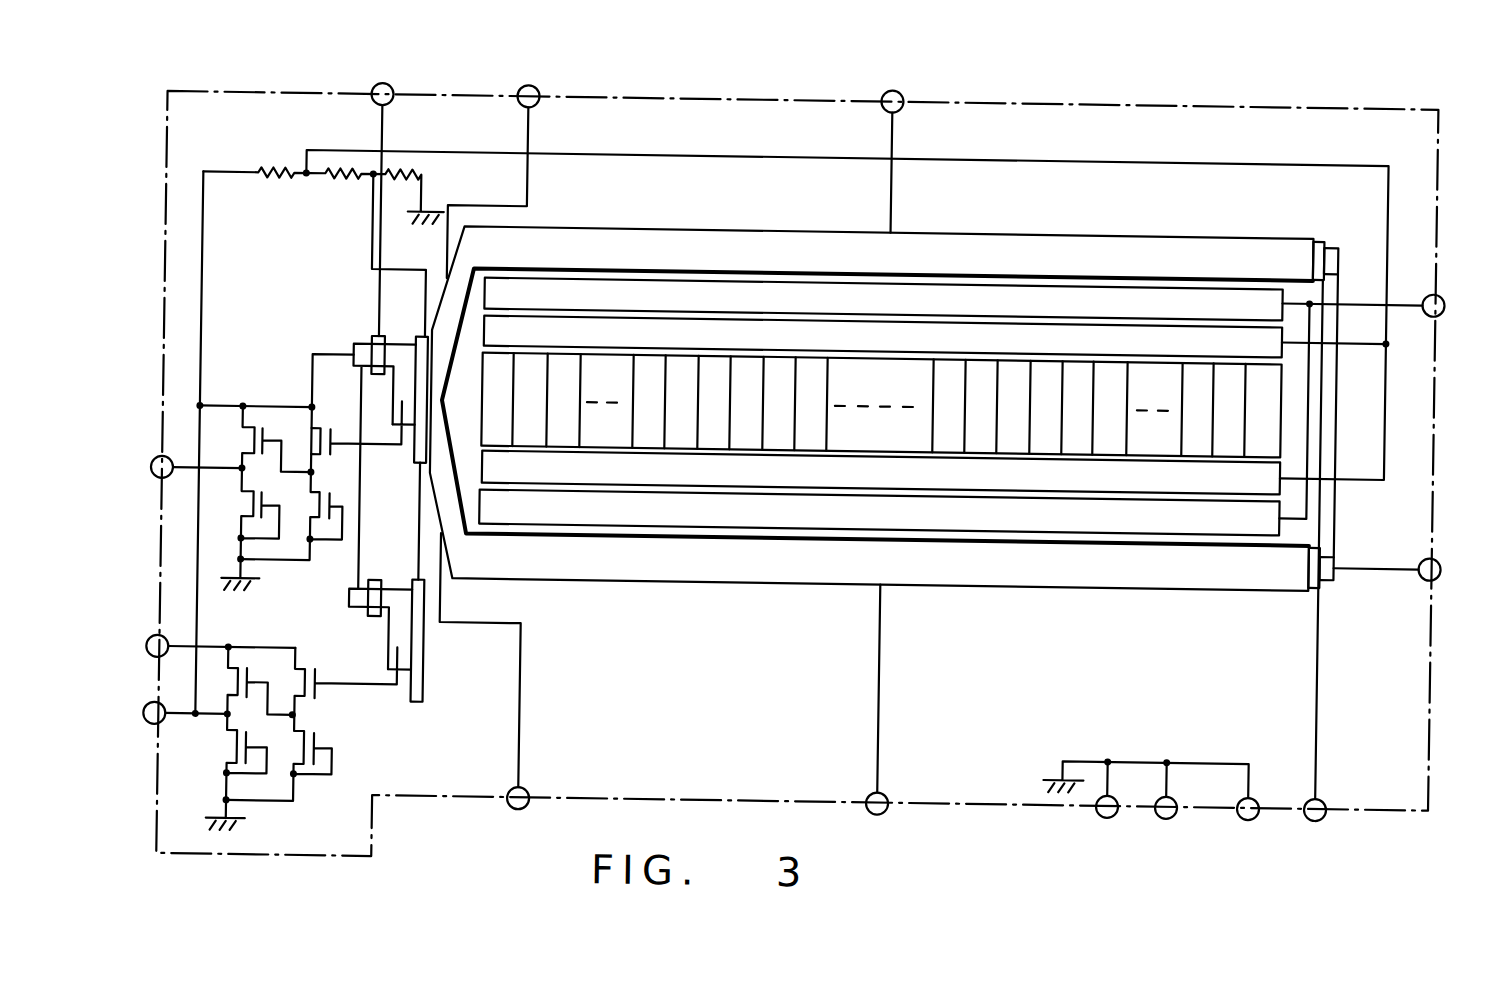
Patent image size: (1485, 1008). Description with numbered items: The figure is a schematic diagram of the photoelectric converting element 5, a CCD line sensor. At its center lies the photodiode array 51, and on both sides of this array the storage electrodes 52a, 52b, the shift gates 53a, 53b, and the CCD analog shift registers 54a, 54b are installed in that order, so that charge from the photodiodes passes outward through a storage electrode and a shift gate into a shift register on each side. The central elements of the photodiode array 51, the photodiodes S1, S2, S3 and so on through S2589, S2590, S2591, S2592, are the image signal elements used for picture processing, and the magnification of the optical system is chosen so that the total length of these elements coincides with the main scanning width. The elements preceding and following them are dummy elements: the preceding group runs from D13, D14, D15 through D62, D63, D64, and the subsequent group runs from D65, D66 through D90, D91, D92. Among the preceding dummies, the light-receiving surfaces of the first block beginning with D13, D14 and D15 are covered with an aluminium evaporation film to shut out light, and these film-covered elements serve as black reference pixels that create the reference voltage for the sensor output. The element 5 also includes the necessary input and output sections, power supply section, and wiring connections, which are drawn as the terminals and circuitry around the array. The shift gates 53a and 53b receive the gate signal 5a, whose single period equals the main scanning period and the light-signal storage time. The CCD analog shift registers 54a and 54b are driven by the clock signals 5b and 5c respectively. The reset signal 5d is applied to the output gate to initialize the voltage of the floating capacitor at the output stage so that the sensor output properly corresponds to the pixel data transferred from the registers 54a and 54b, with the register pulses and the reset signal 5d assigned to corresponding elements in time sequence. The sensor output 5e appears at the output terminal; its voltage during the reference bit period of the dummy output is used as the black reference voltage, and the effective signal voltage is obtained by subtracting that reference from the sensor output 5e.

The photoelectric converting element 5 is at (205, 95).
The gate signal 5a is at (1378, 307).
The clock signal 5b is at (675, 172).
The clock signal 5c is at (664, 689).
The reset signal 5d is at (380, 198).
The sensor output 5e is at (180, 470).
The photodiode array 51 is at (1079, 431).
The storage electrode 52a is at (578, 325).
The storage electrode 52b is at (1214, 474).
The shift gate 53a is at (1227, 293).
The shift gate 53b is at (625, 515).
The CCD analog shift register 54a is at (1070, 228).
The CCD analog shift register 54b is at (770, 570).
The dummy element D13 is at (498, 416).
The dummy element D14 is at (535, 382).
The dummy element D15 is at (558, 416).
The dummy element D62 is at (652, 382).
The dummy element D63 is at (681, 416).
The dummy element D64 is at (715, 382).
The dummy element D65 is at (1078, 382).
The dummy element D66 is at (1112, 433).
The dummy element D90 is at (1197, 388).
The dummy element D91 is at (1233, 437).
The dummy element D92 is at (1262, 382).
The image signal element S1 is at (743, 416).
The image signal element S2 is at (779, 382).
The image signal element S3 is at (806, 416).
The image signal element S2589 is at (942, 382).
The image signal element S2590 is at (980, 432).
The image signal element S2591 is at (1017, 382).
The image signal element S2592 is at (1047, 433).